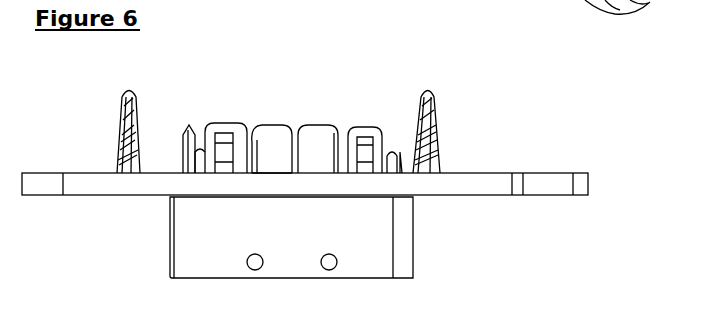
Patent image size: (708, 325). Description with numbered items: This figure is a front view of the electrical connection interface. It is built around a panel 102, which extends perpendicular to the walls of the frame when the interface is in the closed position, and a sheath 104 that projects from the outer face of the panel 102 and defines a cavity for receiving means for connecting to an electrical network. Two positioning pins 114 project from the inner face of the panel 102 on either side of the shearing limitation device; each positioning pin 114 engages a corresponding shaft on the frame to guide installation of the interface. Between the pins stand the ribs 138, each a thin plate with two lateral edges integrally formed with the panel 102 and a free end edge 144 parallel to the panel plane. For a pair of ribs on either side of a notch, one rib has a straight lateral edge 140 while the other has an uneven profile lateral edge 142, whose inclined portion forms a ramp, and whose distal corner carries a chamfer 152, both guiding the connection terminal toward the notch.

The panel 102 is at (531, 229).
The sheath 104 is at (400, 260).
The positioning pin 114 is at (122, 118).
The rib 138 is at (272, 162).
The straight lateral edge 140 is at (390, 153).
The uneven profile lateral edge 142 is at (204, 153).
The free end edge 144 is at (277, 125).
The chamfer 152 is at (355, 127).